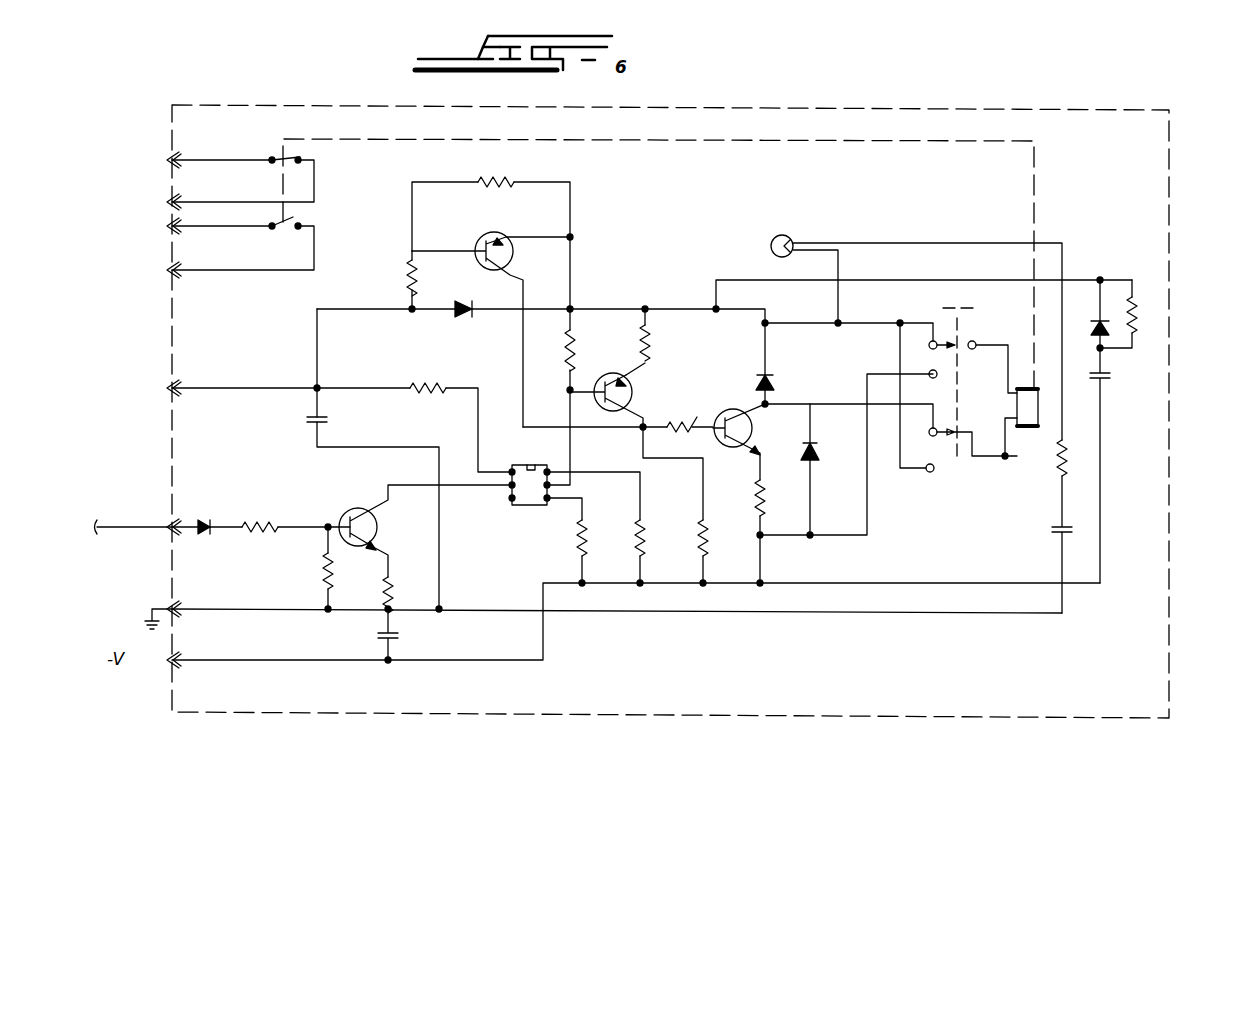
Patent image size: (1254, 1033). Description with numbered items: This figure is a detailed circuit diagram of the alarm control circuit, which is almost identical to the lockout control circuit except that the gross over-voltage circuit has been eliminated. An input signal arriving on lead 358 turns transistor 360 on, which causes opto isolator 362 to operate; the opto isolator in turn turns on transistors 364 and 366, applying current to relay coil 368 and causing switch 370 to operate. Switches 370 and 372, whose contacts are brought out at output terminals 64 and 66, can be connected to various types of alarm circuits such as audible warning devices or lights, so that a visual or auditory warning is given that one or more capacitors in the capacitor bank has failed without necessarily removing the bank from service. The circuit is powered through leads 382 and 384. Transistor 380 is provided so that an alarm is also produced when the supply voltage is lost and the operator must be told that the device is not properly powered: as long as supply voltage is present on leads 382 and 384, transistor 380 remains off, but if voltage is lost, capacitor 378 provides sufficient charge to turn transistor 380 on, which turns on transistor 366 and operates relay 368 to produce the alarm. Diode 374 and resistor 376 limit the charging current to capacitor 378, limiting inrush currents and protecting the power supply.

The output terminal 64 is at (153, 202).
The output terminal 66 is at (153, 270).
The lead 358 is at (112, 527).
The transistor 360 is at (377, 530).
The opto isolator 362 is at (527, 506).
The transistor 364 is at (633, 399).
The transistor 366 is at (751, 441).
The relay coil 368 is at (1029, 430).
The switch 370 is at (292, 160).
The switch 372 is at (293, 229).
The diode 374 is at (1105, 332).
The resistor 376 is at (1138, 320).
The capacitor 378 is at (1106, 380).
The transistor 380 is at (512, 261).
The lead 382 is at (212, 388).
The lead 384 is at (207, 609).